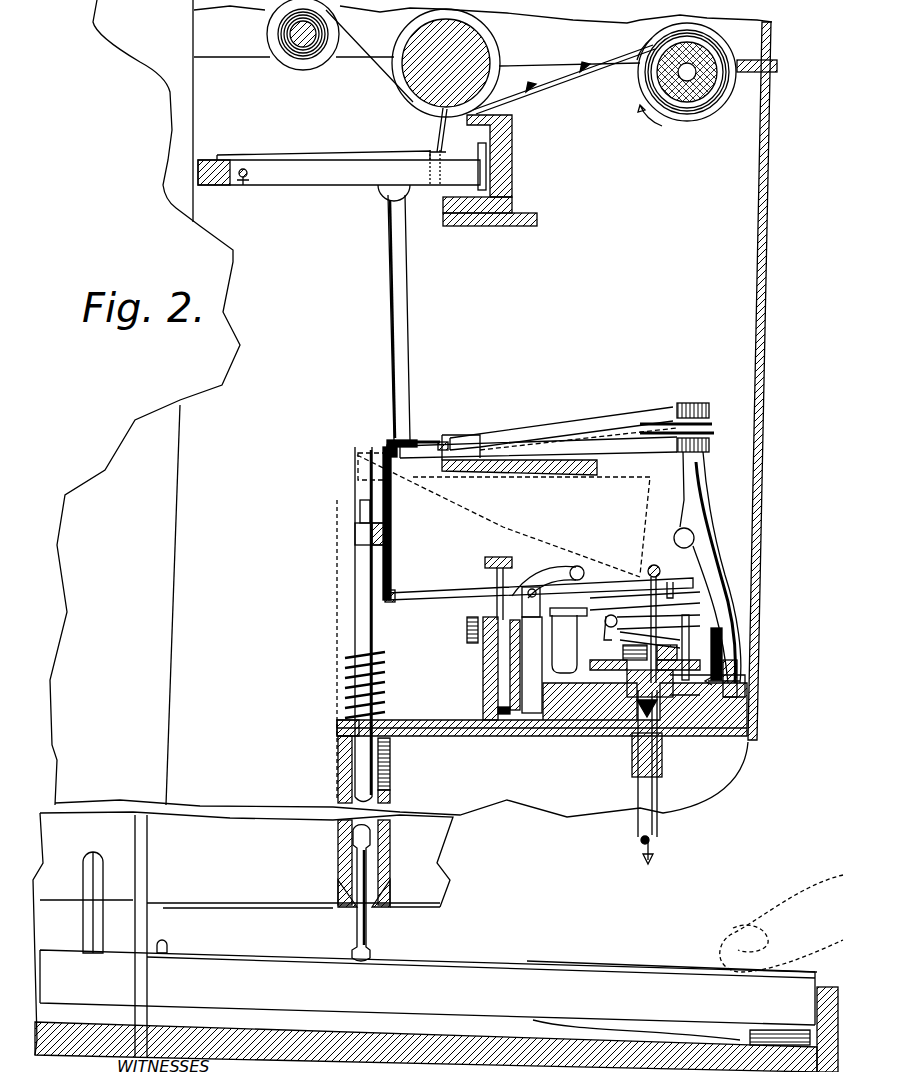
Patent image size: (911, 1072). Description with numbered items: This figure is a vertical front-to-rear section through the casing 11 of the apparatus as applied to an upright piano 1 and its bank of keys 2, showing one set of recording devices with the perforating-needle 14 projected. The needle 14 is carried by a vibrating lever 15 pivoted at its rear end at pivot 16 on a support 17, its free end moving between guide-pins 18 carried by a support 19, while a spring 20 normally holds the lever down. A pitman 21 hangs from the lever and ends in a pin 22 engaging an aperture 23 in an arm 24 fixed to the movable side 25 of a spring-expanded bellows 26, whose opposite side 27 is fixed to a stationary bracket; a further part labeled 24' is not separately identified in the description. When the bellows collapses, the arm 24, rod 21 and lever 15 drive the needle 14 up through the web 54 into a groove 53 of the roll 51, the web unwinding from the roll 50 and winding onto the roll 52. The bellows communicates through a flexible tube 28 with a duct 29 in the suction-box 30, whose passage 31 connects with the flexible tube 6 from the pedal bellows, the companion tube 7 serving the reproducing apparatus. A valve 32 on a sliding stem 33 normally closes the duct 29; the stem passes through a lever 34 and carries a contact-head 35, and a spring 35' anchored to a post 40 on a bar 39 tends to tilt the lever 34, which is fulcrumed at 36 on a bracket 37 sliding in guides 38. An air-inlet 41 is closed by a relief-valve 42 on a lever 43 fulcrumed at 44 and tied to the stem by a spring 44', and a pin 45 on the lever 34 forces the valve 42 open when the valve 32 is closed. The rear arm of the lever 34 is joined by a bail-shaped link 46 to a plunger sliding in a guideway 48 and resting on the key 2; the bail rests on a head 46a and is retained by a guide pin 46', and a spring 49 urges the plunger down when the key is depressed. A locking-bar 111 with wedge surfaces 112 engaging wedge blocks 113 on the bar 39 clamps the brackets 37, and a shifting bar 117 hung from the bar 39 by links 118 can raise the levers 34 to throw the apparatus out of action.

The piano 1 is at (153, 420).
The bank of keys 2 is at (510, 973).
The flexible tube 6 is at (640, 825).
The flexible tube 7 is at (357, 450).
The casing 11 is at (746, 381).
The perforating-needle 14 is at (442, 125).
The vibrating lever 15 is at (355, 175).
The pivot 16 is at (246, 180).
The support 17 is at (217, 185).
The guide-pins 18 is at (488, 163).
The support 19 is at (513, 184).
The spring 20 is at (322, 140).
The pitman 21 is at (408, 330).
The pin 22 is at (455, 463).
The aperture 23 is at (392, 445).
The arm 24 is at (472, 424).
The lower plate 24' is at (538, 471).
The movable side 25 is at (562, 428).
The bellows 26 is at (637, 420).
The opposite side 27 is at (620, 455).
The flexible tube 28 is at (708, 510).
The duct 29 is at (617, 683).
The suction-box 30 is at (697, 747).
The longitudinal passage 31 is at (632, 765).
The valve 32 is at (748, 686).
The sliding stem 33 is at (652, 565).
The lever 34 is at (582, 568).
The contact-head 35 is at (728, 629).
The spring 35' is at (547, 561).
The fulcrum 36 is at (486, 586).
The bracket 37 is at (540, 575).
The guides 38 is at (533, 702).
The bar 39 is at (483, 673).
The post 40 is at (489, 566).
The air-inlet 41 is at (576, 632).
The relief-valve 42 is at (495, 608).
The lever 43 is at (640, 620).
The fulcrum 44 is at (547, 704).
The spring 44' is at (718, 630).
The pin 45 is at (660, 580).
The bail-shaped link 46 is at (414, 523).
The guide pin 46' is at (336, 514).
The head 46a is at (357, 538).
The guideway 48 is at (337, 748).
The spring 49 is at (348, 682).
The roll 50 is at (292, 63).
The roll 51 is at (412, 34).
The roll 52 is at (697, 122).
The annular grooves 53 is at (498, 52).
The web 54 is at (395, 88).
The locking-bar 111 is at (500, 740).
The wedge surface 112 is at (462, 740).
The wedge block 113 is at (483, 700).
The shifting bar 117 is at (467, 630).
The links 118 is at (487, 650).